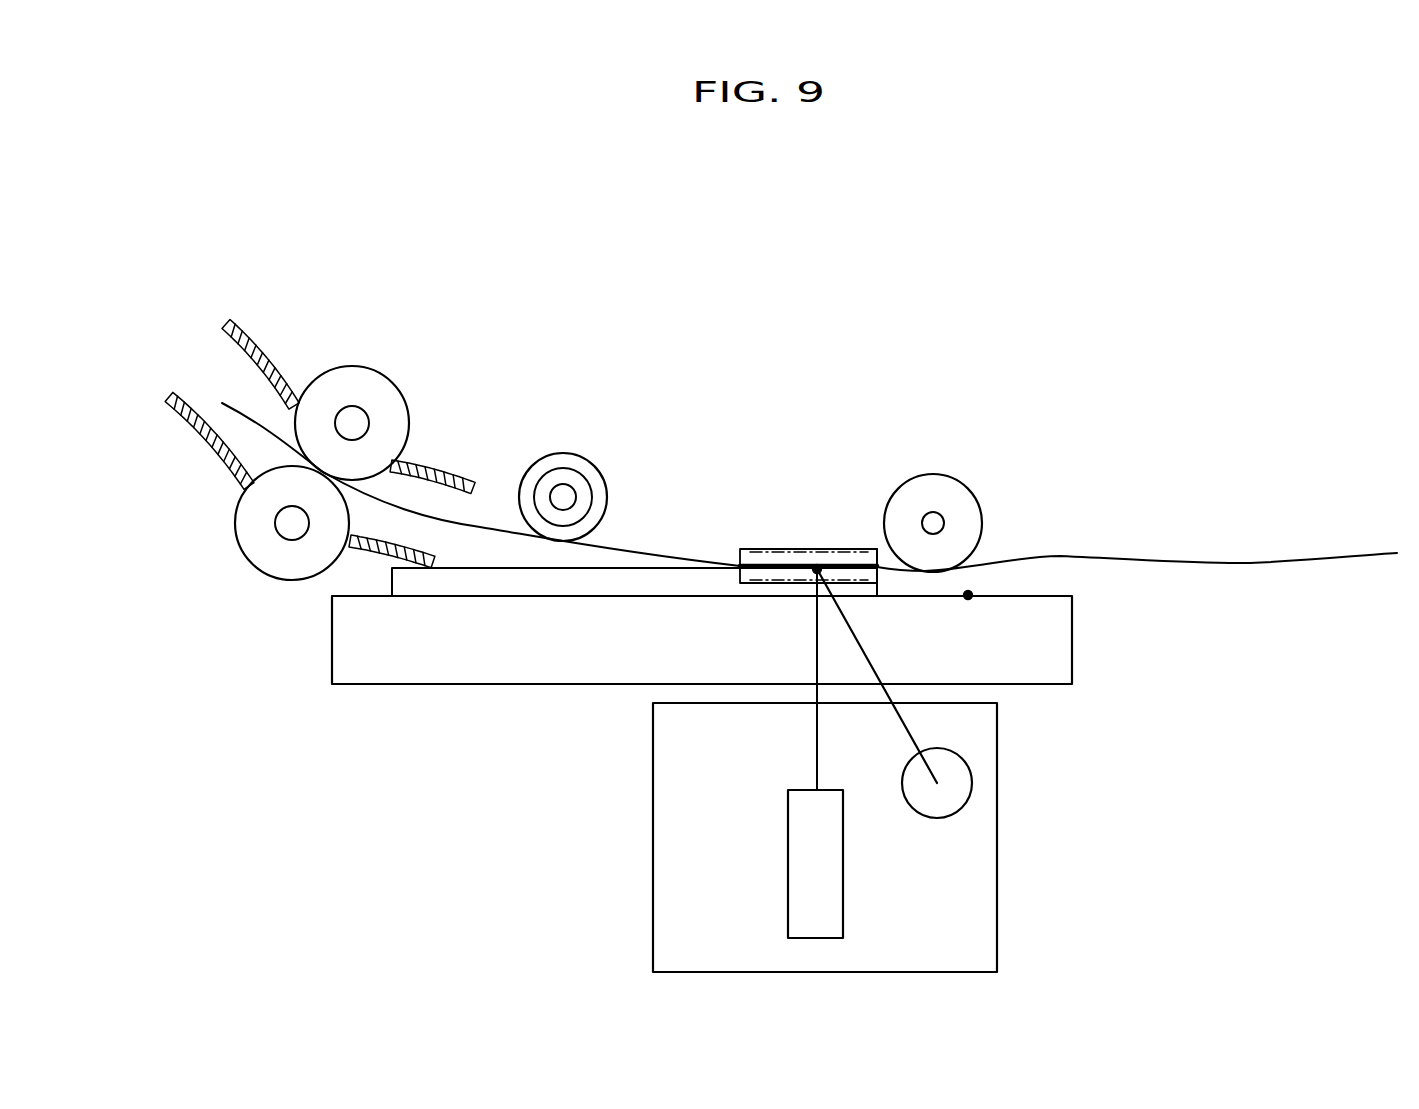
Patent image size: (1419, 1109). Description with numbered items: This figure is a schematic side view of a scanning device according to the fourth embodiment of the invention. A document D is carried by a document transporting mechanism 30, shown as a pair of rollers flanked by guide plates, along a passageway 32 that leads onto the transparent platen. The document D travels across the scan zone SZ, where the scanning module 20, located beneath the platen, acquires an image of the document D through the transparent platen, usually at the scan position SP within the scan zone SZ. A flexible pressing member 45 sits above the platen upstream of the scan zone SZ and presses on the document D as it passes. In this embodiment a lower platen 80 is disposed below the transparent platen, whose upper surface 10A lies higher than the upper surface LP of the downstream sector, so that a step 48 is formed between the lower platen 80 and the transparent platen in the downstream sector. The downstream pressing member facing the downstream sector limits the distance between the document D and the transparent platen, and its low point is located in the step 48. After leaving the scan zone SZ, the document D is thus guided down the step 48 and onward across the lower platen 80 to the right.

The document transporting mechanism 30 is at (377, 397).
The passageway 32 is at (237, 440).
The upper surface of the transparent platen 10A is at (683, 567).
The document D is at (512, 530).
The flexible pressing member 45 is at (579, 456).
The lower platen 80 is at (355, 676).
The scan position SP is at (817, 565).
The scan zone SZ is at (748, 583).
The step 48 is at (897, 588).
The upper surface of the downstream sector LP is at (968, 597).
The scanning module 20 is at (655, 840).